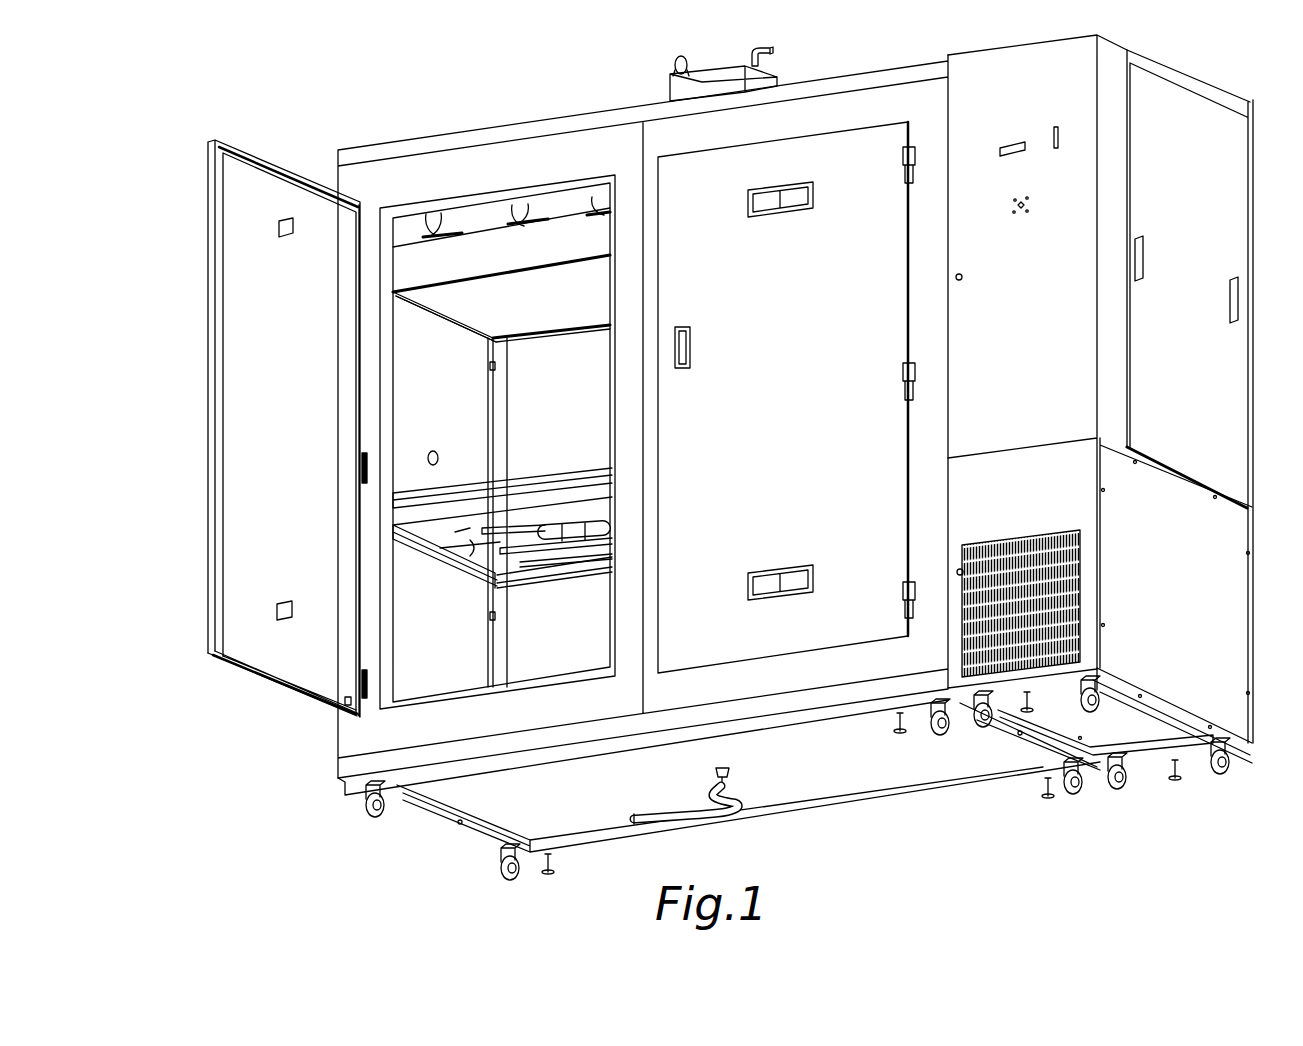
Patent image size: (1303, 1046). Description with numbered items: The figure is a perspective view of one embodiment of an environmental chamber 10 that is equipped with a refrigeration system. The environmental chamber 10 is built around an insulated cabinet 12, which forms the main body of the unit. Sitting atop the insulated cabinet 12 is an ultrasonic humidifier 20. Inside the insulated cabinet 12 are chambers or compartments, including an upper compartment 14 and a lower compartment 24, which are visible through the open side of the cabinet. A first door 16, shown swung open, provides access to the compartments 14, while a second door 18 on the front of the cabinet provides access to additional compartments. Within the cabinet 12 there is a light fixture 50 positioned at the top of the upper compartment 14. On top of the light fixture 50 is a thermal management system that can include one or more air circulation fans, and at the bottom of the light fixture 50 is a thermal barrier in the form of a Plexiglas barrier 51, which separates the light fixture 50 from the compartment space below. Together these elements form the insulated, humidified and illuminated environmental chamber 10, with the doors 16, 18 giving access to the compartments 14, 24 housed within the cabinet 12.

The environmental chamber 10 is at (318, 82).
The insulated cabinet 12 is at (580, 112).
The upper compartment 14 is at (445, 418).
The first door 16 is at (212, 334).
The second door 18 is at (865, 625).
The ultrasonic humidifier 20 is at (680, 88).
The lower compartment 24 is at (445, 647).
The light fixture 50 is at (428, 266).
The Plexiglas barrier 51 is at (542, 317).